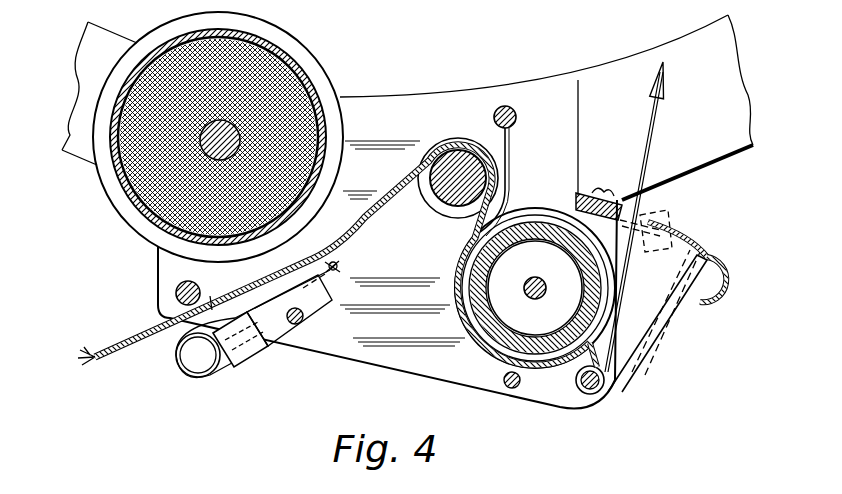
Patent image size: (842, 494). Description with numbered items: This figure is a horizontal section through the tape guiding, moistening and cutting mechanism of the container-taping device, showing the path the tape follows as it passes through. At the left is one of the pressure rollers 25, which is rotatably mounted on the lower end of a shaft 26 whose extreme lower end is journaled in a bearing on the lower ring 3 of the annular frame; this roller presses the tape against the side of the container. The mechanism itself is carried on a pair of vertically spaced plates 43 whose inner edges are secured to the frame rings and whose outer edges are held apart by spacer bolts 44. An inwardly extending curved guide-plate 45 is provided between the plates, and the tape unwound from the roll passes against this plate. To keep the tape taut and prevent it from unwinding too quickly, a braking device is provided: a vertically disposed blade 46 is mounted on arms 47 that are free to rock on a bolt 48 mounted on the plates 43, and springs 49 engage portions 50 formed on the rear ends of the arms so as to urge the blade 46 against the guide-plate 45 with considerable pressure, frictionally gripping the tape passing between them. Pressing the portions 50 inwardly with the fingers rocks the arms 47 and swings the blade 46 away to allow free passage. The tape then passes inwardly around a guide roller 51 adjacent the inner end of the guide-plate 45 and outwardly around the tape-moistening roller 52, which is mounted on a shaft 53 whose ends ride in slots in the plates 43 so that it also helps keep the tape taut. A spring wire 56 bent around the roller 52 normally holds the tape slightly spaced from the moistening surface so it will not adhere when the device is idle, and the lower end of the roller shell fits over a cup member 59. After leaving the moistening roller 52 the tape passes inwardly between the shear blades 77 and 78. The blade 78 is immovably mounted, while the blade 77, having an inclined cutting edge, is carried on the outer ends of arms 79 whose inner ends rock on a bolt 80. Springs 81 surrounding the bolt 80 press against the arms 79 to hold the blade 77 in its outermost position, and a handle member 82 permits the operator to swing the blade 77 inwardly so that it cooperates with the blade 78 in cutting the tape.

The lower ring 3 is at (611, 82).
The pressure roller 25 is at (312, 88).
The shaft 26 is at (222, 138).
The vertically spaced plates 43 is at (435, 369).
The spacer bolts 44 is at (512, 389).
The curved guide-plate 45 is at (333, 248).
The blade 46 is at (337, 268).
The arms 47 is at (283, 327).
The bolt 48 is at (304, 316).
The springs 49 is at (203, 378).
The portions 50 is at (247, 364).
The guide roller 51 is at (458, 155).
The tape-moistening roller 52 is at (533, 228).
The shaft 53 is at (535, 279).
The spring wire 56 is at (509, 125).
The cup member 59 is at (508, 310).
The movable shear blade 77 is at (650, 230).
The fixed shear blade 78 is at (618, 211).
The arms 79 is at (655, 308).
The bolt 80 is at (605, 385).
The springs 81 is at (565, 365).
The handle member 82 is at (725, 296).